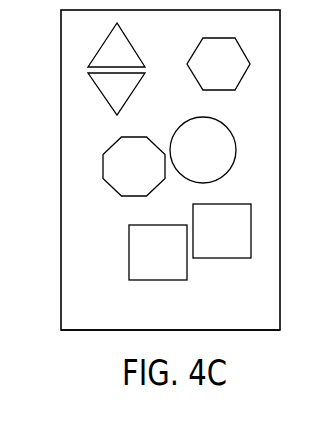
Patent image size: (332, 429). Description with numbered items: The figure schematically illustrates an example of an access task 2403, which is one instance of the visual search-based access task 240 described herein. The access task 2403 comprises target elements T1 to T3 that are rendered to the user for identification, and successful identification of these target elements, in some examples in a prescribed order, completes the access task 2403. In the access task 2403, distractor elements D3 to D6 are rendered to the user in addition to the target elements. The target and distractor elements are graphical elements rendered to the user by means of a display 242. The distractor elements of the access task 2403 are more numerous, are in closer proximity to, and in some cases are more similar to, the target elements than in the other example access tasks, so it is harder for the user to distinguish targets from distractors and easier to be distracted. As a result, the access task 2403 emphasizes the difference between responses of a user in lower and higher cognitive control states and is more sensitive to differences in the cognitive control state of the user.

The access task 240 is at (143, 170).
The access task 2403 is at (55, 246).
The display 242 is at (86, 330).